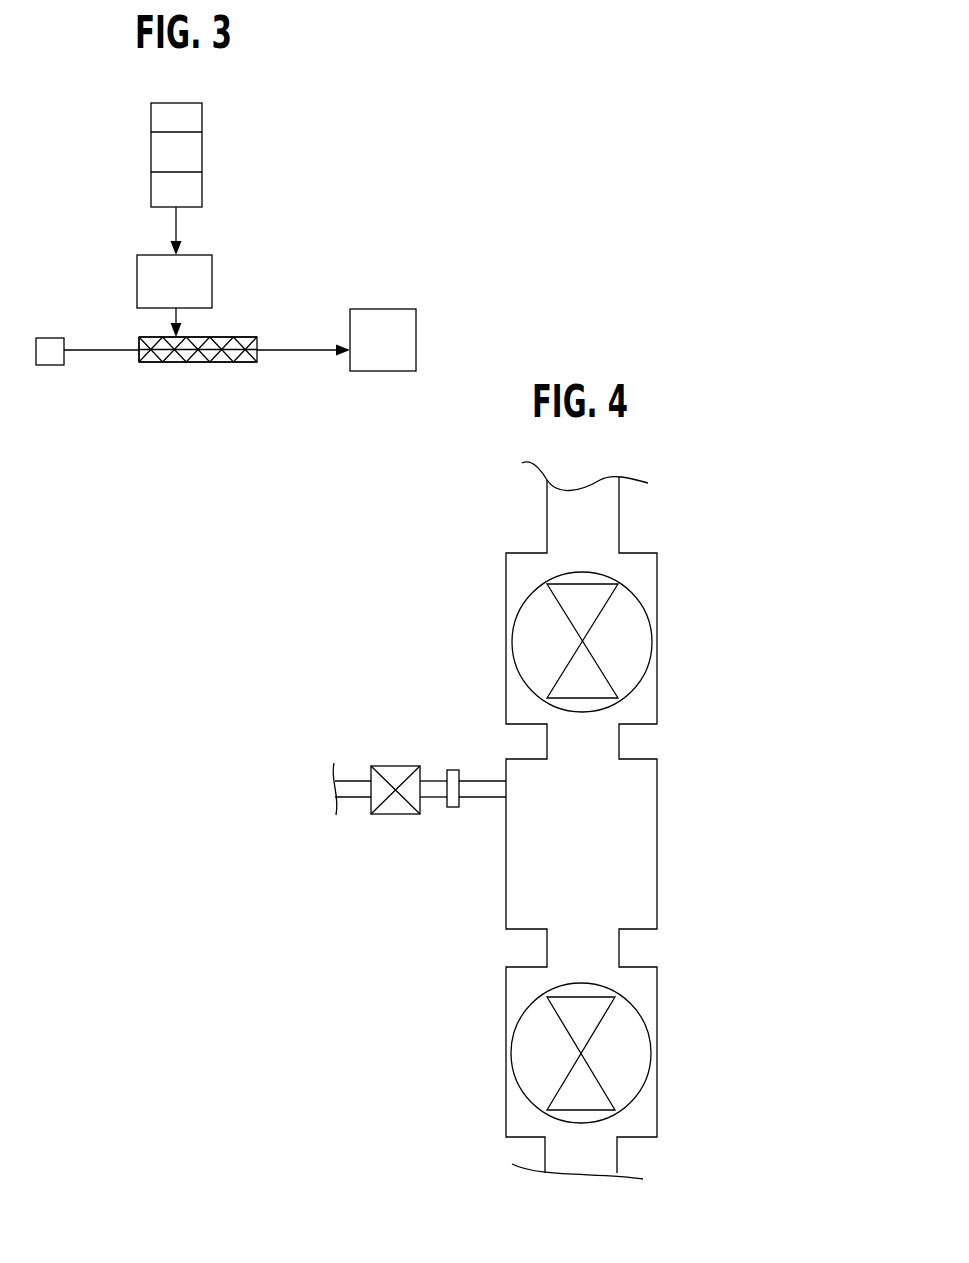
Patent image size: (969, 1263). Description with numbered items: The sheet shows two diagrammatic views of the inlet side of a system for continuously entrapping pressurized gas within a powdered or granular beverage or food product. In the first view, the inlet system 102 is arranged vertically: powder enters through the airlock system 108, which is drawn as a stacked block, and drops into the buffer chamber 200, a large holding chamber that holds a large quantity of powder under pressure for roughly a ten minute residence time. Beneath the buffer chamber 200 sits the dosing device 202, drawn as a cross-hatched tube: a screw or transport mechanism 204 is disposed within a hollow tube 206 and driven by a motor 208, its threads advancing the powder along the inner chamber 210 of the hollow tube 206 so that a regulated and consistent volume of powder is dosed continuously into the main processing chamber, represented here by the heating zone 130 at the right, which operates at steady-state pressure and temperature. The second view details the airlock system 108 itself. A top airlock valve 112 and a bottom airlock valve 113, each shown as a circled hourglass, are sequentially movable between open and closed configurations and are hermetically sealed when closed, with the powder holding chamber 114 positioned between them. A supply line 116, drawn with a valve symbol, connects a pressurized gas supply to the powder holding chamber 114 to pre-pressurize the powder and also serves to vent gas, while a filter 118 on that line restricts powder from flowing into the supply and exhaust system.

In FIG. 3, the inlet system 102 is at (240, 196).
In FIG. 4, the inlet system 102 is at (716, 660).
In FIG. 3, the airlock system 108 is at (130, 169).
In FIG. 4, the airlock system 108 is at (714, 905).
In FIG. 3, the buffer chamber 200 is at (228, 277).
In FIG. 3, the inner chamber 210 is at (257, 337).
In FIG. 3, the screw or transport mechanism 204 is at (139, 347).
In FIG. 3, the hollow tube 206 is at (153, 363).
In FIG. 3, the dosing device 202 is at (186, 377).
In FIG. 3, the motor 208 is at (47, 337).
In FIG. 3, the heating zone 130 is at (380, 337).
In FIG. 4, the top airlock valve 112 is at (657, 586).
In FIG. 4, the bottom airlock valve 113 is at (657, 1040).
In FIG. 4, the powder holding chamber 114 is at (657, 815).
In FIG. 4, the supply line 116 is at (363, 797).
In FIG. 4, the filter 118 is at (453, 807).